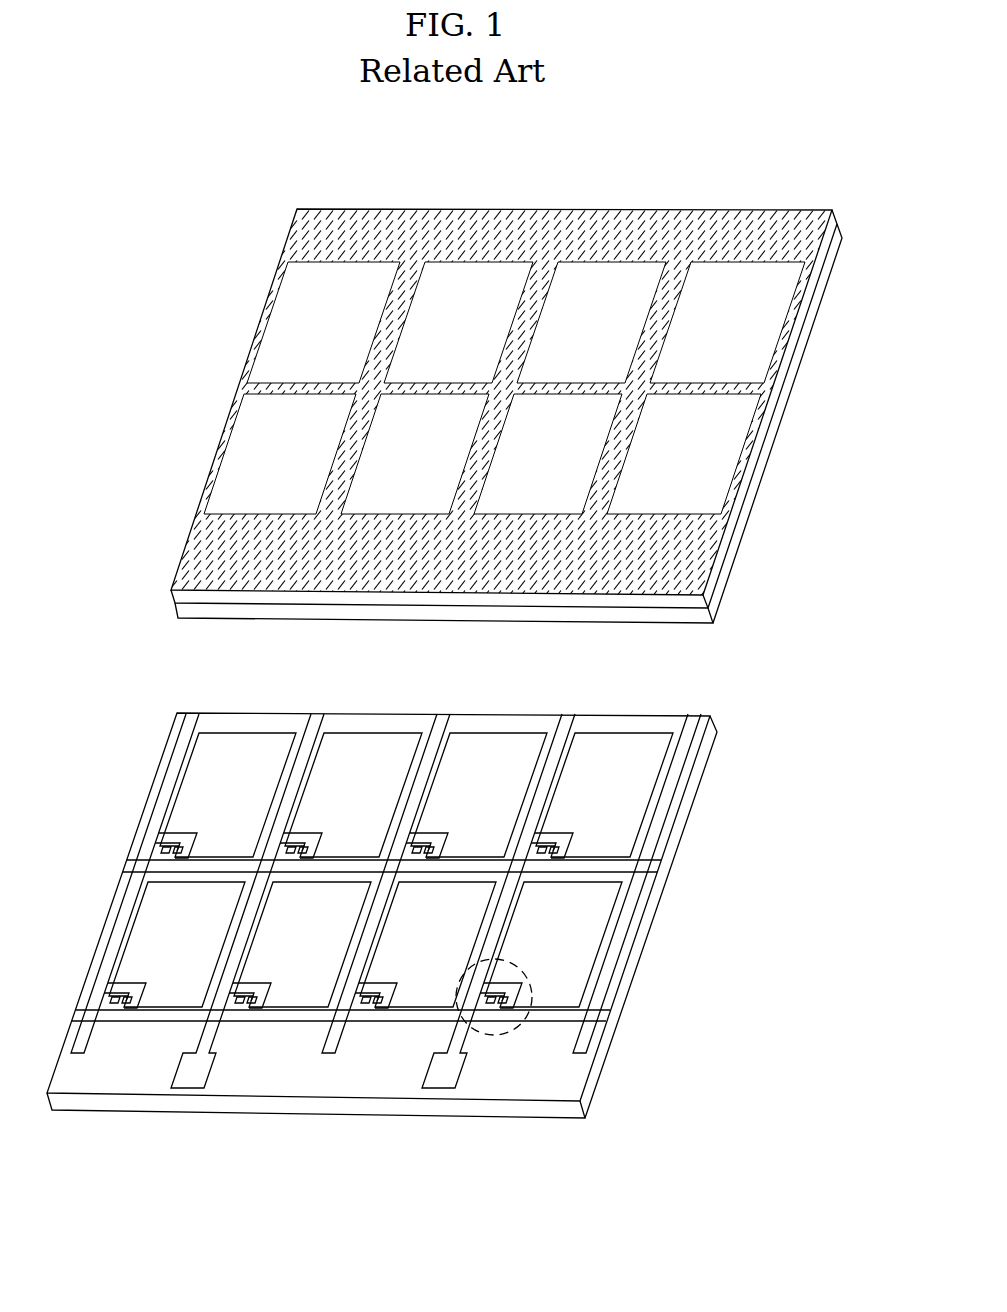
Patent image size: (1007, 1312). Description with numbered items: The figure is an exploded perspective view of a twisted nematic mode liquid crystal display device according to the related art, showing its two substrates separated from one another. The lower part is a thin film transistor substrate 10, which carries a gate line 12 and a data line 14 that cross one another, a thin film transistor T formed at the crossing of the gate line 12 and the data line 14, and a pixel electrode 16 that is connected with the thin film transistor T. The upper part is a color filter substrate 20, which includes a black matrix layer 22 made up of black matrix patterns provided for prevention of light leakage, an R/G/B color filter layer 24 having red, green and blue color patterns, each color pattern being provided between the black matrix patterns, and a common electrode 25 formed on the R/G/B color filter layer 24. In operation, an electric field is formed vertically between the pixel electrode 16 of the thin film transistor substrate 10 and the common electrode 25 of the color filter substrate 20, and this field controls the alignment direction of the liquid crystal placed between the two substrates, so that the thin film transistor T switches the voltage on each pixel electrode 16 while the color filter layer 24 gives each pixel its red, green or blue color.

The thin film transistor substrate 10 is at (582, 1112).
The gate line 12 is at (597, 1018).
The data line 14 is at (453, 1040).
The pixel electrode 16 is at (602, 955).
The thin film transistor T is at (488, 1036).
The color filter substrate 20 is at (693, 603).
The black matrix layer 22 is at (768, 386).
The R/G/B color filter layer 24 is at (558, 298).
The common electrode 25 is at (697, 615).